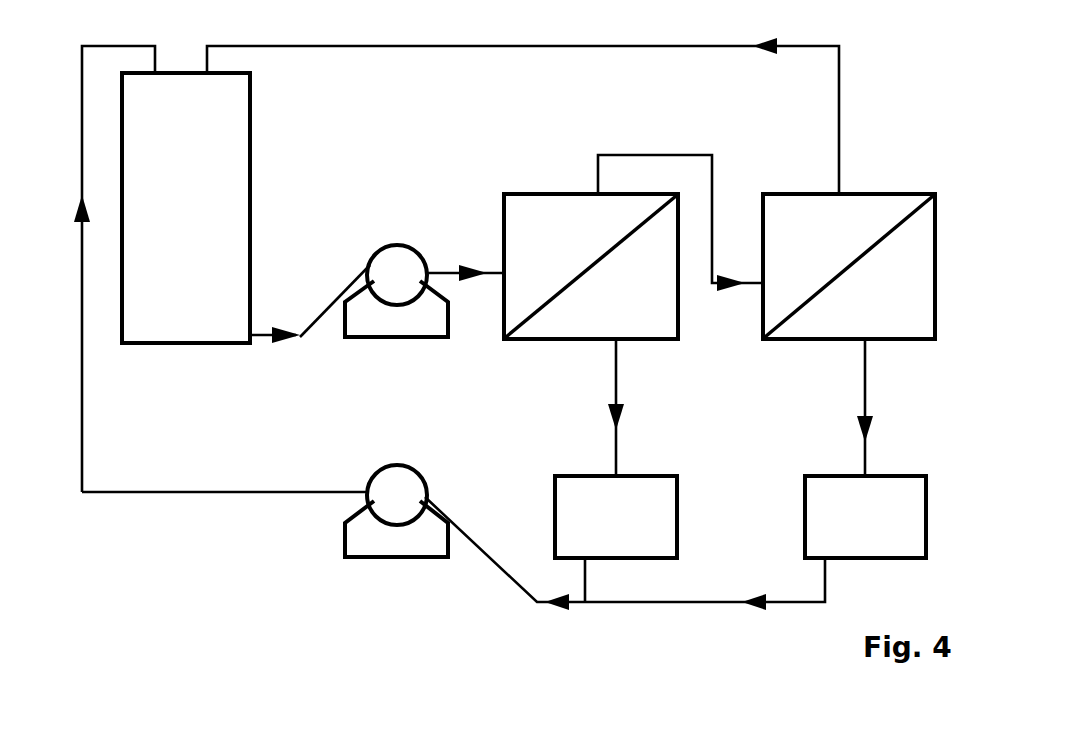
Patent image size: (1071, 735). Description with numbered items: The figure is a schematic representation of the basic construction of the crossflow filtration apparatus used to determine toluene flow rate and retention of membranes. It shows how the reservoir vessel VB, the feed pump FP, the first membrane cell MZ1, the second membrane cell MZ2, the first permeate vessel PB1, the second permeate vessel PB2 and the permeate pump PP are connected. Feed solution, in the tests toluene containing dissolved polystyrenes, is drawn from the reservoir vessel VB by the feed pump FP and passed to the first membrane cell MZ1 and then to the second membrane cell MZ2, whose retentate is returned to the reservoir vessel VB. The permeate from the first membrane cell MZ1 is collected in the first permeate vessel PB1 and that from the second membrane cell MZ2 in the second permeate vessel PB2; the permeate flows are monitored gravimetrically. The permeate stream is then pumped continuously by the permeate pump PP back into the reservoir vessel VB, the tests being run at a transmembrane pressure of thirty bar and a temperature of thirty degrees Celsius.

The reservoir vessel VB is at (186, 208).
The feed pump FP is at (396, 311).
The membrane cell 1 MZ1 is at (591, 266).
The membrane cell 2 MZ2 is at (849, 266).
The permeate vessel 1 PB1 is at (616, 517).
The permeate vessel 2 PB2 is at (865, 517).
The permeate pump PP is at (396, 531).